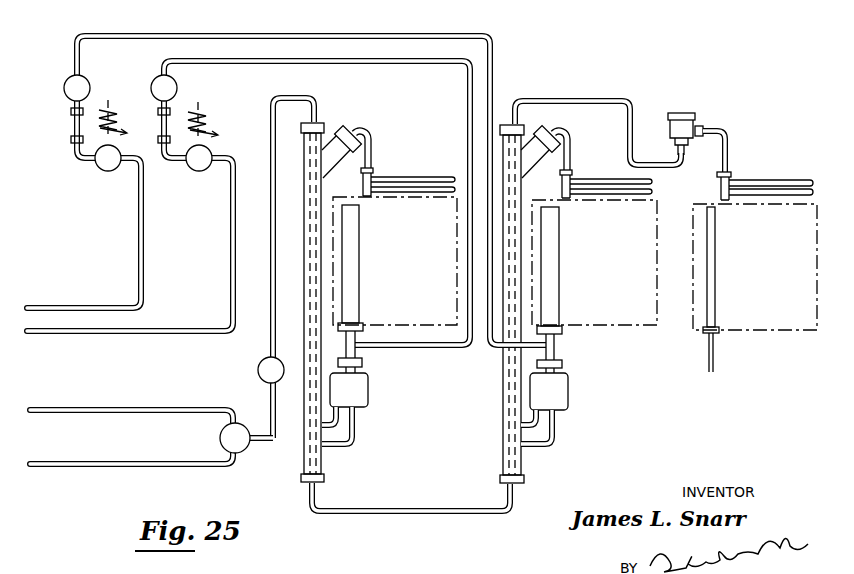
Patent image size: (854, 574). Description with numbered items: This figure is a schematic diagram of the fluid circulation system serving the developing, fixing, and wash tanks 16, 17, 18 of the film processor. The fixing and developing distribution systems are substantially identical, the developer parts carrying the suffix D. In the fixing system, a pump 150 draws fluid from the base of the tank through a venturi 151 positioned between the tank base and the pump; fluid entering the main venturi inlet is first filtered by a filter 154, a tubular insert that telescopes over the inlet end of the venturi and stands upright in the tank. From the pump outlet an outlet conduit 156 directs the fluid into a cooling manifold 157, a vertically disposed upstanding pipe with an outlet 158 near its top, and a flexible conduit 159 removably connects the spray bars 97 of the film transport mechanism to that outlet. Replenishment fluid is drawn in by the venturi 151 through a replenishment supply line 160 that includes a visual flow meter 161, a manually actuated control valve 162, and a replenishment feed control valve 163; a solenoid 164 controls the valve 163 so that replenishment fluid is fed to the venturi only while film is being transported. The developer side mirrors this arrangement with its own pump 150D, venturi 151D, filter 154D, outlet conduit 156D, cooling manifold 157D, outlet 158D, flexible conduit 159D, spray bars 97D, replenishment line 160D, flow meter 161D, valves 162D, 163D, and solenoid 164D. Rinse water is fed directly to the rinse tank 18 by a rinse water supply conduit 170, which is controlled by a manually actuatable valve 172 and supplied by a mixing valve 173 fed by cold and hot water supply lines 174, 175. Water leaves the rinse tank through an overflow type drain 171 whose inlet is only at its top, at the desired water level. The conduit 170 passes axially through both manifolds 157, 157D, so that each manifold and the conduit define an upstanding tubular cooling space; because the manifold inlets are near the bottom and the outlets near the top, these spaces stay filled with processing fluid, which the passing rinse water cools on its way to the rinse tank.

The developing tank 16 is at (405, 322).
The fixing tank 17 is at (622, 326).
The wash tank 18 is at (772, 332).
The spray bars 97 is at (612, 180).
The spray bars (developer system) 97D is at (418, 178).
The pump 150 is at (570, 400).
The pump (developer system) 150D is at (370, 392).
The venturi 151 is at (556, 352).
The venturi (developer system) 151D is at (362, 349).
The filter 154 is at (560, 280).
The filter (developer system) 154D is at (358, 262).
The outlet conduit 156 is at (550, 447).
The outlet conduit (developer system) 156D is at (352, 445).
The cooling manifold 157 is at (500, 402).
The cooling manifold (developer system) 157D is at (303, 465).
The manifold outlet 158 is at (530, 146).
The manifold outlet (developer system) 158D is at (333, 127).
The flexible conduit 159 is at (570, 132).
The flexible conduit (developer system) 159D is at (372, 126).
The replenishment supply line 160 is at (496, 62).
The replenishment supply line (developer system) 160D is at (467, 292).
The visual flow meter 161 is at (70, 128).
The visual flow meter (developer system) 161D is at (161, 124).
The manually actuated control valve 162 is at (65, 84).
The manually actuated control valve (developer system) 162D is at (178, 85).
The replenishment feed control valve 163 is at (103, 170).
The replenishment feed control valve (developer system) 163D is at (196, 171).
The solenoid 164 is at (118, 95).
The solenoid (developer system) 164D is at (196, 112).
The rinse water supply conduit 170 is at (603, 100).
The overflow type drain 171 is at (716, 266).
The manually actuatable valve 172 is at (258, 370).
The mixing valve 173 is at (219, 438).
The cold water supply line 174 is at (73, 406).
The hot water supply line 175 is at (83, 461).